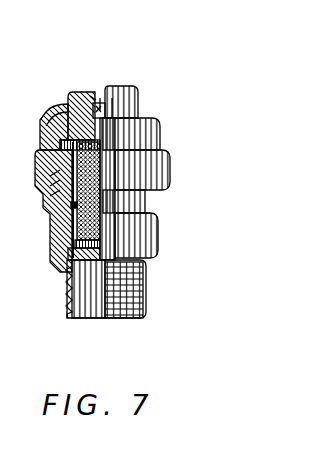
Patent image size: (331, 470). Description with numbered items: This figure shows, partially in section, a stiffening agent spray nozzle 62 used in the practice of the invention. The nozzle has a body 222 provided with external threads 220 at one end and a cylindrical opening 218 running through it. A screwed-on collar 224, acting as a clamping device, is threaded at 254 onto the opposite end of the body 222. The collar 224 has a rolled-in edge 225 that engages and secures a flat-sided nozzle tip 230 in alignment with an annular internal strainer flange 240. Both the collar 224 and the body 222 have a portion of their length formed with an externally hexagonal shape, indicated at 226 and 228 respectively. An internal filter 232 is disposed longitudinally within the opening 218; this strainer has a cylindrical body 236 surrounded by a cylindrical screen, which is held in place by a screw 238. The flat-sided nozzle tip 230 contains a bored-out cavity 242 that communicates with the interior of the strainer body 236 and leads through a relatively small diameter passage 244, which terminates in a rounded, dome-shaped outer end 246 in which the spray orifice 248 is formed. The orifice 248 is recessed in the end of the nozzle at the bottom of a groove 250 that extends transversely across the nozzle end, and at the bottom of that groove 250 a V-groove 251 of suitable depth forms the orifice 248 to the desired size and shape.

The stiffening agent spray nozzle 62 is at (148, 201).
The cylindrical opening 218 is at (93, 303).
The external threads 220 is at (123, 303).
The body 222 is at (146, 210).
The collar 224 is at (160, 135).
The rolled-in edge 225 is at (62, 140).
The externally hexagonal form of collar 226 is at (158, 246).
The externally hexagonal form of body 228 is at (168, 171).
The flat-sided nozzle tip 230 is at (118, 88).
The internal filter 232 is at (72, 205).
The cylindrical body of strainer 236 is at (78, 218).
The screw 238 is at (72, 264).
The strainer flange 240 is at (55, 145).
The bored-out cavity 242 is at (66, 110).
The passage 244 is at (112, 104).
The dome-shaped outer end 246 is at (97, 102).
The spray orifice 248 is at (100, 100).
The groove 250 is at (100, 94).
The V-groove 251 is at (91, 94).
The threaded connection 254 is at (56, 183).